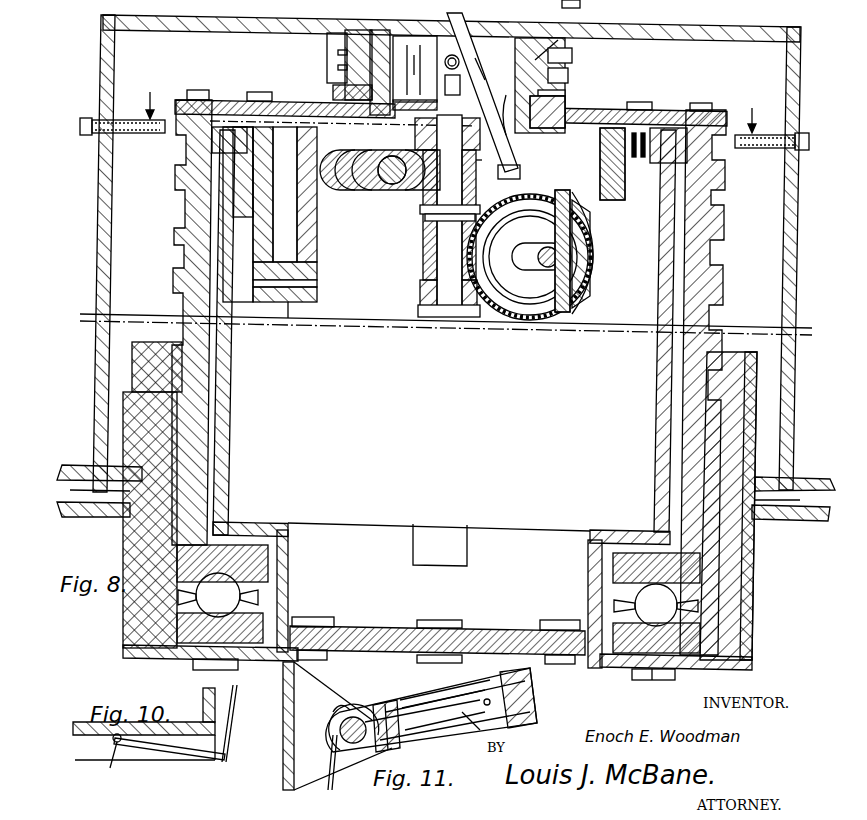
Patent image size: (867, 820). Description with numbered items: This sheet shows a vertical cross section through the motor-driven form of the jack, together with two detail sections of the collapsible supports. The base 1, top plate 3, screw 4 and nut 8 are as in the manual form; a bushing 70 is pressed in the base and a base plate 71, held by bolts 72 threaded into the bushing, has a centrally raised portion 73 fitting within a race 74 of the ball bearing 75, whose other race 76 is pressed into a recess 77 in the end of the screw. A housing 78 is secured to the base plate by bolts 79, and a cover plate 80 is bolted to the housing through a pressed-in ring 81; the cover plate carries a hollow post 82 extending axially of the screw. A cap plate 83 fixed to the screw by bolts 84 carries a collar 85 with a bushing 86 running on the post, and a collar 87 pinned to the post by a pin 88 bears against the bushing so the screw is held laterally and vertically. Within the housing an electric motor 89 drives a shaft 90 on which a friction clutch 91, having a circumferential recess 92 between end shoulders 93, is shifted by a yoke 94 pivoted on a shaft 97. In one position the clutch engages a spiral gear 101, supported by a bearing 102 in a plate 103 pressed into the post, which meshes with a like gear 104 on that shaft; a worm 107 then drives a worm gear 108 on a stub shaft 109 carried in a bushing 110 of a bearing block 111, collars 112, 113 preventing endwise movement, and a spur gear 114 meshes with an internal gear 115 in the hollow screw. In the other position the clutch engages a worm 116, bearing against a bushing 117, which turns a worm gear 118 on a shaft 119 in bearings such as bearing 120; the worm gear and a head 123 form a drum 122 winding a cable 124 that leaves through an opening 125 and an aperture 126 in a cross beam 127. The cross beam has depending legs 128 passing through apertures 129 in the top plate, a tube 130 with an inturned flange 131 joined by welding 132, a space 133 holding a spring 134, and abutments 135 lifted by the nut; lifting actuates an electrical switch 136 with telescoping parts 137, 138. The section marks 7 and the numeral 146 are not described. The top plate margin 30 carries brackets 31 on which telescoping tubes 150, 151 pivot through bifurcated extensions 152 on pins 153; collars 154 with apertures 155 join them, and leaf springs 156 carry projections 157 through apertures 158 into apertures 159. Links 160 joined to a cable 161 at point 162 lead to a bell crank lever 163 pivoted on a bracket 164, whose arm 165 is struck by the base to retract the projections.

In FIG. 8, the base 1 is at (75, 513).
In FIG. 10, the base 1 is at (76, 762).
In FIG. 8, the top plate 3 is at (72, 473).
In FIG. 10, the top plate 3 is at (74, 723).
In FIG. 8, the screw 4 is at (176, 233).
In FIG. 8, the section arrow 7 is at (450, 105).
In FIG. 8, the nut 8 is at (158, 345).
In FIG. 11, the margin 30 is at (284, 742).
In FIG. 11, the brackets 31 is at (322, 702).
In FIG. 8, the bushing 70 is at (745, 600).
In FIG. 8, the base plate 71 is at (748, 662).
In FIG. 8, the bolts 72 is at (660, 680).
In FIG. 8, the centrally raised portion 73 is at (492, 642).
In FIG. 8, the race 74 is at (268, 617).
In FIG. 8, the ball bearing 75 is at (246, 590).
In FIG. 8, the race 76 is at (272, 560).
In FIG. 8, the recess 77 is at (178, 596).
In FIG. 8, the housing 78 is at (229, 420).
In FIG. 8, the bolts 79 is at (427, 627).
In FIG. 8, the cover plate 80 is at (616, 171).
In FIG. 8, the ring 81 is at (655, 206).
In FIG. 8, the hollow post 82 is at (505, 44).
In FIG. 8, the cap plate 83 is at (675, 101).
In FIG. 8, the bolts 84 is at (700, 103).
In FIG. 8, the collar 85 is at (565, 102).
In FIG. 8, the bushing 86 is at (575, 92).
In FIG. 8, the collar 87 is at (560, 44).
In FIG. 8, the pin 88 is at (455, 76).
In FIG. 8, the electric motor 89 is at (496, 523).
In FIG. 8, the motor shaft 90 is at (450, 317).
In FIG. 8, the friction clutch 91 is at (420, 216).
In FIG. 8, the circumferential recess 92 is at (420, 208).
In FIG. 8, the end shoulders 93 is at (428, 217).
In FIG. 8, the yoke 94 is at (396, 184).
In FIG. 8, the shaft 97 is at (380, 182).
In FIG. 8, the spiral gear 101 is at (472, 175).
In FIG. 8, the bearing 102 is at (428, 140).
In FIG. 8, the plate 103 is at (483, 140).
In FIG. 8, the gear 104 is at (452, 212).
In FIG. 8, the worm 107 is at (380, 160).
In FIG. 8, the worm gear 108 is at (222, 173).
In FIG. 8, the stub shaft 109 is at (289, 306).
In FIG. 8, the bushing 110 is at (316, 272).
In FIG. 8, the bearing block 111 is at (248, 278).
In FIG. 8, the collar 112 is at (316, 296).
In FIG. 8, the collar 113 is at (301, 194).
In FIG. 8, the spur gear 114 is at (316, 108).
In FIG. 8, the internal gear 115 is at (222, 118).
In FIG. 8, the worm 116 is at (426, 246).
In FIG. 8, the bushing 117 is at (420, 290).
In FIG. 8, the worm gear 118 is at (510, 315).
In FIG. 8, the shaft 119 is at (545, 247).
In FIG. 8, the bearing 120 is at (580, 266).
In FIG. 8, the drum 122 is at (540, 263).
In FIG. 8, the drum head 123 is at (597, 249).
In FIG. 8, the cable 124 is at (472, 62).
In FIG. 8, the opening 125 is at (501, 104).
In FIG. 8, the aperture 126 is at (448, 20).
In FIG. 8, the cross beam 127 is at (288, 26).
In FIG. 8, the depending legs 128 is at (96, 278).
In FIG. 8, the apertures 129 is at (96, 466).
In FIG. 8, the tube 130 is at (326, 50).
In FIG. 8, the inturned flange 131 is at (345, 84).
In FIG. 8, the welding 132 is at (325, 35).
In FIG. 8, the space 133 is at (566, 55).
In FIG. 8, the spring 134 is at (572, 70).
In FIG. 8, the abutments 135 is at (138, 134).
In FIG. 8, the electrical switch 136 is at (455, 93).
In FIG. 8, the telescoping part 137 is at (403, 72).
In FIG. 8, the telescoping part 138 is at (415, 69).
In FIG. 8, the stub 146 is at (538, 6).
In FIG. 11, the tube 150 is at (372, 704).
In FIG. 11, the tube 151 is at (335, 765).
In FIG. 11, the bifurcated extension 152 is at (348, 710).
In FIG. 11, the pin 153 is at (336, 733).
In FIG. 11, the collar 154 is at (360, 737).
In FIG. 11, the aperture 155 is at (388, 729).
In FIG. 11, the leaf spring 156 is at (422, 727).
In FIG. 11, the projection 157 is at (495, 720).
In FIG. 11, the aperture 158 is at (482, 680).
In FIG. 11, the aperture 159 is at (462, 745).
In FIG. 11, the link 160 is at (462, 720).
In FIG. 10, the cable 161 is at (229, 709).
In FIG. 11, the cable 161 is at (404, 725).
In FIG. 11, the point 162 is at (478, 708).
In FIG. 10, the bell crank lever 163 is at (168, 751).
In FIG. 10, the bracket 164 is at (111, 738).
In FIG. 10, the arm 165 is at (127, 755).